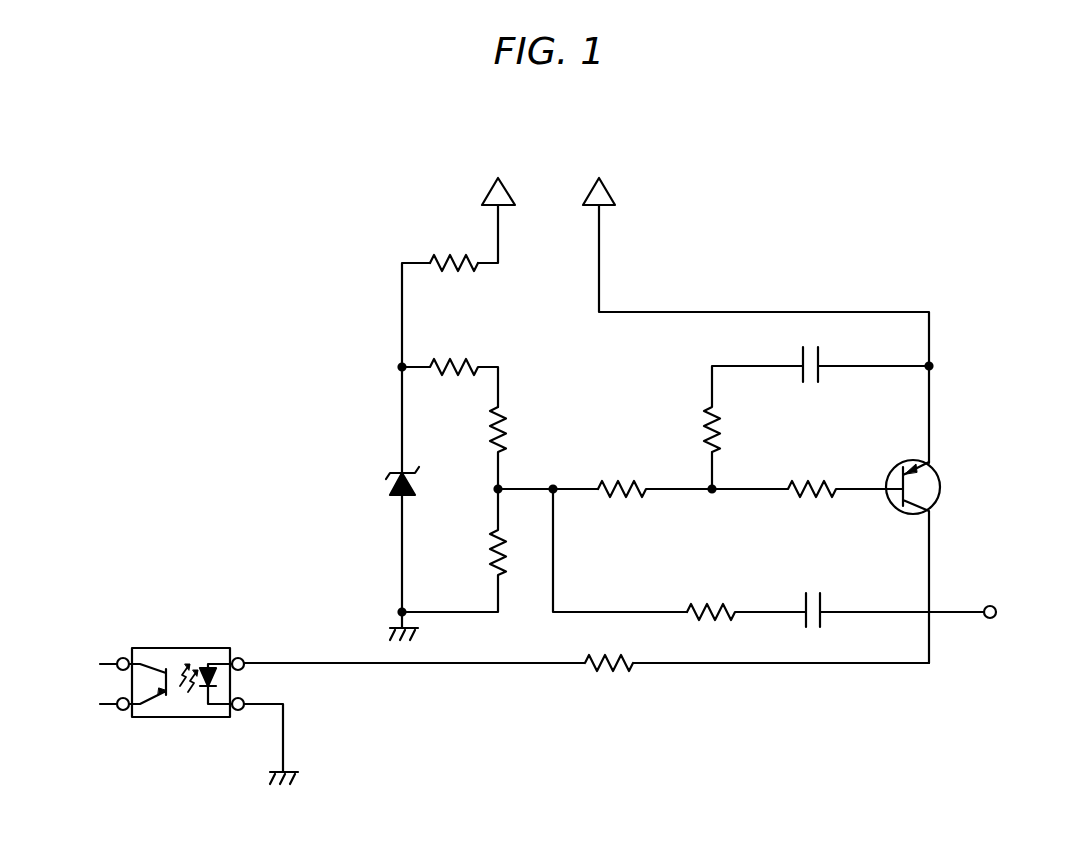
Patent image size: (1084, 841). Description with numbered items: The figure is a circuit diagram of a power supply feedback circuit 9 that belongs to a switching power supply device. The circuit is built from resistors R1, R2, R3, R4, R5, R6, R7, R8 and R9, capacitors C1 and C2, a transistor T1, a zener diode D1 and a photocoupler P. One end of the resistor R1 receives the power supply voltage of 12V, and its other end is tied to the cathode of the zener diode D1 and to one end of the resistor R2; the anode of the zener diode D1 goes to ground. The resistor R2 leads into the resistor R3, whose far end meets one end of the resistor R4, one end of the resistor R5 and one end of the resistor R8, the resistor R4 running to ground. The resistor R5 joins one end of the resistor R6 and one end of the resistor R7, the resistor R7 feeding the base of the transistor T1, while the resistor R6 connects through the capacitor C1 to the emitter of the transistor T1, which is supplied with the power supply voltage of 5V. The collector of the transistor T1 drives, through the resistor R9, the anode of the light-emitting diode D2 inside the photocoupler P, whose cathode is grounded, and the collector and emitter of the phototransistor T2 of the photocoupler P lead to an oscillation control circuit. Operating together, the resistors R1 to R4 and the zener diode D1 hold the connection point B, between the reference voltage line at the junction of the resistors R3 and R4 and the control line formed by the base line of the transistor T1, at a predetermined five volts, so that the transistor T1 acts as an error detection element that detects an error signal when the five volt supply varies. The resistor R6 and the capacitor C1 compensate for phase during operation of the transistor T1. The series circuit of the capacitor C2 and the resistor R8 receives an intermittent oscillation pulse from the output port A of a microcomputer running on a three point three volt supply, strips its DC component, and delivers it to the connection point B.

The power supply feedback circuit 9 is at (216, 220).
The power supply voltage of 12 V 12V is at (498, 208).
The power supply voltage of 5 V 5V is at (758, 308).
The resistor R1 is at (441, 270).
The resistor R2 is at (466, 368).
The resistor R3 is at (505, 432).
The resistor R4 is at (490, 561).
The resistor R5 is at (613, 500).
The resistor R6 is at (722, 432).
The resistor R7 is at (815, 500).
The resistor R8 is at (737, 607).
The resistor R9 is at (603, 671).
The capacitor C1 is at (811, 384).
The capacitor C2 is at (822, 597).
The zener diode D1 is at (418, 483).
The light-emitting diode D2 is at (206, 660).
The transistor T1 is at (945, 486).
The phototransistor T2 is at (163, 668).
The photocoupler P is at (185, 720).
The output port A is at (992, 619).
The connection point B is at (557, 496).